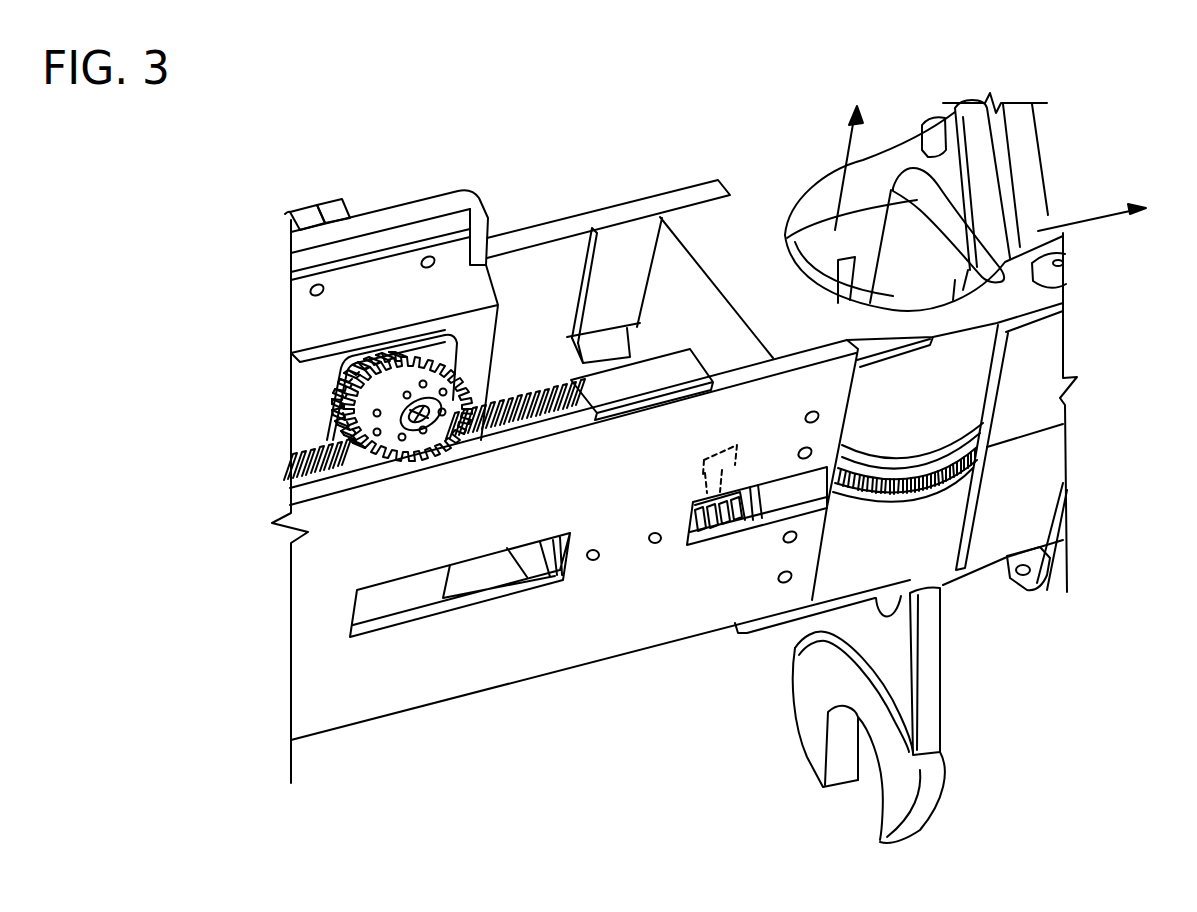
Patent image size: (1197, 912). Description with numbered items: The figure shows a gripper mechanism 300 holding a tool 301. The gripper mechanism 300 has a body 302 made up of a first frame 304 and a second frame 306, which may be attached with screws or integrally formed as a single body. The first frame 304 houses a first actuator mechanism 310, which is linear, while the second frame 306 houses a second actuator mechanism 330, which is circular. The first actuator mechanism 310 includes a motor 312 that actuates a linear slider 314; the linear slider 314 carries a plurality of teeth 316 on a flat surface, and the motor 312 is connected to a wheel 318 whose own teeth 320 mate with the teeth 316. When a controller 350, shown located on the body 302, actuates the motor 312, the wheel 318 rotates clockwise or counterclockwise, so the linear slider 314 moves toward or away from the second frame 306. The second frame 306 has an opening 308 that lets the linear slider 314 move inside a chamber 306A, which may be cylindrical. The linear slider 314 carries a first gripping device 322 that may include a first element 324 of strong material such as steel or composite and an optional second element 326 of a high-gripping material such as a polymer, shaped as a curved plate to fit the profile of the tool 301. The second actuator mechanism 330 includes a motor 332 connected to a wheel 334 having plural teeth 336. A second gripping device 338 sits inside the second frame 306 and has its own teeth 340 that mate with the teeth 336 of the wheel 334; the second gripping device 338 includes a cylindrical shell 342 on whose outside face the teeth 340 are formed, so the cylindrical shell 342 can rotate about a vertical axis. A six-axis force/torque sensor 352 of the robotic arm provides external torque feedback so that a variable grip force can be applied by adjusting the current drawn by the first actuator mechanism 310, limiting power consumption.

The gripper mechanism 300 is at (611, 103).
The tool 301 is at (932, 643).
The body 302 is at (685, 188).
The first frame 304 is at (572, 663).
The second frame 306 is at (1008, 592).
The chamber 306A is at (870, 300).
The opening 308 is at (708, 350).
The first actuator mechanism 310 is at (425, 163).
The motor 312 is at (351, 327).
The linear slider 314 is at (637, 383).
The teeth 316 is at (523, 390).
The wheel 318 is at (290, 459).
The teeth 320 is at (428, 362).
The first gripping device 322 is at (894, 168).
The first element 324 is at (893, 287).
The second element 326 is at (943, 227).
The second actuator mechanism 330 is at (1088, 404).
The motor 332 is at (702, 457).
The wheel 334 is at (693, 507).
The teeth 336 is at (712, 512).
The second gripping device 338 is at (923, 440).
The teeth 340 is at (913, 489).
The cylindrical shell 342 is at (1020, 232).
The controller 350 is at (307, 205).
The 6-axes force/torque sensor 352 is at (330, 198).